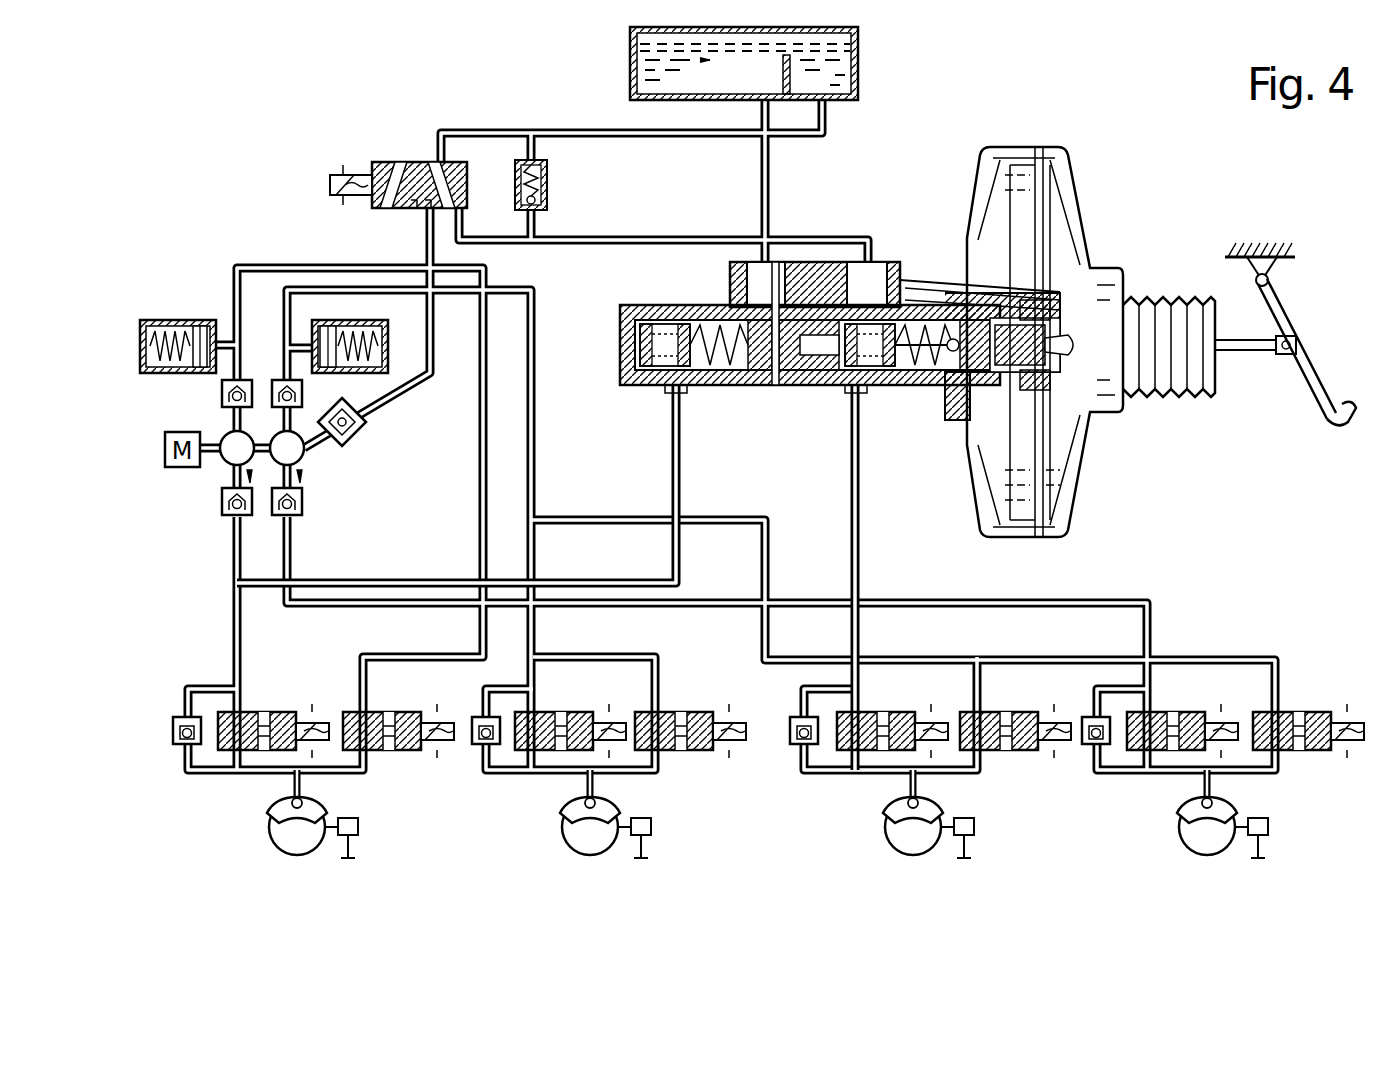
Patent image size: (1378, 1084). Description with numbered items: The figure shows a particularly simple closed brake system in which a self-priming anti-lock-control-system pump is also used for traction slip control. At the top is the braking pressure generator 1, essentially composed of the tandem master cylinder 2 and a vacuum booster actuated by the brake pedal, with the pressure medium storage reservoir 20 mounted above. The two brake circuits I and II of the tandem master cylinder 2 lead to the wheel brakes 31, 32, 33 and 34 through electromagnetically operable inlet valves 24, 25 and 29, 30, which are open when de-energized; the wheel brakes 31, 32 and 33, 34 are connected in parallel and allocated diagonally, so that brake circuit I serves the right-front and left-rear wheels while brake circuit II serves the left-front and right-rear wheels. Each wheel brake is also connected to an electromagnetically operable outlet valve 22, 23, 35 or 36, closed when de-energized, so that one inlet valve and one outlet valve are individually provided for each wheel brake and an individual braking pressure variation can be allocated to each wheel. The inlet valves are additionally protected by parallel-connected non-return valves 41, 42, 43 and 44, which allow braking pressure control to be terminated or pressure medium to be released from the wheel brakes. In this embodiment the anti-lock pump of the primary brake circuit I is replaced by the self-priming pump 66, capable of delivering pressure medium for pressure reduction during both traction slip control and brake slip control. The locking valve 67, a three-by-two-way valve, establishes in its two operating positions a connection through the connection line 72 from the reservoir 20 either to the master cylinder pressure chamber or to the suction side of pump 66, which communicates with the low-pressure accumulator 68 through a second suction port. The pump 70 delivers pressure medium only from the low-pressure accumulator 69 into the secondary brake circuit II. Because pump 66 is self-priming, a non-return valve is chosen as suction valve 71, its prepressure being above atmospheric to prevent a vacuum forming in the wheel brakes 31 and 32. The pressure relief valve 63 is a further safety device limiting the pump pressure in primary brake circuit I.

The braking pressure generator 1 is at (928, 235).
The tandem master cylinder 2 is at (622, 305).
The pressure medium storage reservoir 20 is at (860, 58).
The outlet valve 22 is at (1286, 712).
The outlet valve 23 is at (992, 712).
The inlet valve 24 is at (1167, 712).
The inlet valve 25 is at (879, 712).
The inlet valve 29 is at (547, 712).
The inlet valve 30 is at (252, 712).
The wheel brake 31 is at (1192, 805).
The wheel brake 32 is at (898, 805).
The wheel brake 33 is at (575, 805).
The wheel brake 34 is at (282, 805).
The outlet valve 35 is at (677, 712).
The outlet valve 36 is at (382, 712).
The non-return valve 41 is at (1082, 730).
The non-return valve 42 is at (790, 730).
The non-return valve 43 is at (472, 730).
The non-return valve 44 is at (173, 730).
The pressure relief valve 63 is at (549, 185).
The self-priming pump 66 is at (300, 458).
The locking valve 67 is at (415, 160).
The low-pressure accumulator 68 is at (378, 374).
The low-pressure accumulator 69 is at (170, 320).
The pump 70 is at (225, 438).
The suction valve 71 is at (282, 385).
The connection line 72 is at (681, 138).
The primary brake circuit I is at (849, 466).
The secondary brake circuit II is at (670, 466).